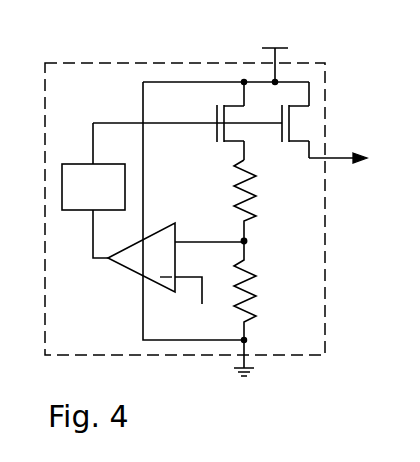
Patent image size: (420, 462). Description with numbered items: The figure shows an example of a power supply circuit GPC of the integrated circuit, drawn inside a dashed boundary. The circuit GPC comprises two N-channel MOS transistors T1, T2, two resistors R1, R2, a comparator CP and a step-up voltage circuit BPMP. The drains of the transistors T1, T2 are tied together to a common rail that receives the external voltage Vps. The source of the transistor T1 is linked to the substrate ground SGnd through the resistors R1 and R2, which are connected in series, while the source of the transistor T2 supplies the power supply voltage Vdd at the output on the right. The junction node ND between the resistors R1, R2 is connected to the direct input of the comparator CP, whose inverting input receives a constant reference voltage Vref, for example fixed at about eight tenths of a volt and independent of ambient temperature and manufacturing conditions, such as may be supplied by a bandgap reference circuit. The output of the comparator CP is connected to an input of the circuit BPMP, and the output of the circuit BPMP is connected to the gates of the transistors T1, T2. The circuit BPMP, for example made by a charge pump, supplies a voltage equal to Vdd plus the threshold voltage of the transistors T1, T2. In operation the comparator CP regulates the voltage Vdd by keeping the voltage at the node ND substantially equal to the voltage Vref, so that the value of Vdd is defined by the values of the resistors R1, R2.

The power supply circuit GPC is at (96, 94).
The external voltage Vps is at (278, 51).
The power supply voltage Vdd is at (357, 158).
The step-up voltage circuit BPMP is at (93, 190).
The N-channel MOS transistor T1 is at (217, 143).
The N-channel MOS transistor T2 is at (282, 143).
The resistor R1 is at (257, 185).
The resistor R2 is at (257, 286).
The junction node ND is at (246, 243).
The comparator CP is at (170, 269).
The reference voltage Vref is at (200, 304).
The substrate ground SGnd is at (232, 372).